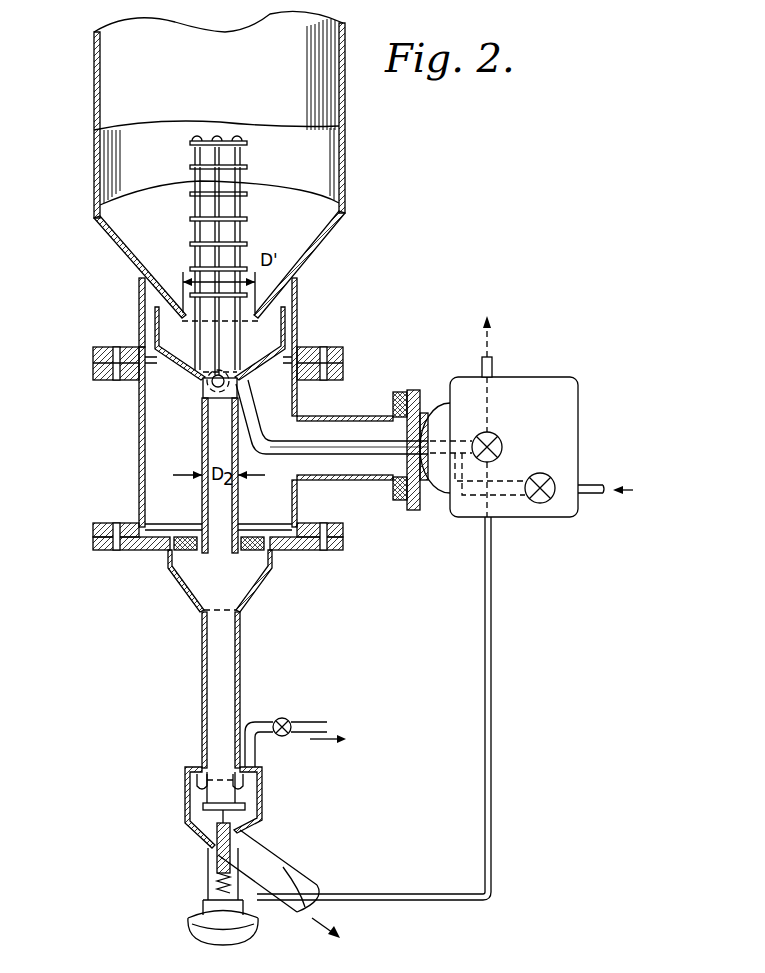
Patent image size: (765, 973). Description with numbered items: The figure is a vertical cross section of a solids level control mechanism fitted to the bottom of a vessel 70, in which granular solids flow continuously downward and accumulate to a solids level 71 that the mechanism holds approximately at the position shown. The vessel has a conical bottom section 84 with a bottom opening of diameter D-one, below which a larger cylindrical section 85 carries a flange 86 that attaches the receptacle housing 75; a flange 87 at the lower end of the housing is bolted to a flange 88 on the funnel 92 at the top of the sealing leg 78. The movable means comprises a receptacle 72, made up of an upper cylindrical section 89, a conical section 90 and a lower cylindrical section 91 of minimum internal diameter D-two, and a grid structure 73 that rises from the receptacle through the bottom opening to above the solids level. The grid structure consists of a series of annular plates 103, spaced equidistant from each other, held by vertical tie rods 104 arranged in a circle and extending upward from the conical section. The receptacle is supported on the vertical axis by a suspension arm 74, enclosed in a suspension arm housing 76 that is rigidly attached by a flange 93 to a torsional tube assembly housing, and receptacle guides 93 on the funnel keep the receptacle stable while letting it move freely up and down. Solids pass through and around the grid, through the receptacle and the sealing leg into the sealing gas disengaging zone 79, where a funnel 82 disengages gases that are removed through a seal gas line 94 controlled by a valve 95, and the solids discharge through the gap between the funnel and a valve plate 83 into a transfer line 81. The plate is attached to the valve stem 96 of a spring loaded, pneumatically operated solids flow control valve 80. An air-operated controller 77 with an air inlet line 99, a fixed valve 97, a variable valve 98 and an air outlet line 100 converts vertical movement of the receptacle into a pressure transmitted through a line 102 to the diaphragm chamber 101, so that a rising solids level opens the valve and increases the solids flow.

The vessel 70 is at (100, 75).
The solids level 71 is at (307, 187).
The receptacle 72 is at (205, 372).
The grid structure 73 is at (227, 240).
The suspension arm 74 is at (250, 423).
The receptacle housing 75 is at (142, 420).
The suspension arm housing 76 is at (323, 417).
The air-operated controller 77 is at (558, 377).
The sealing leg 78 is at (240, 653).
The sealing gas disengaging zone 79 is at (183, 780).
The solids flow control valve 80 is at (248, 802).
The transfer line 81 is at (300, 877).
The funnel 82 is at (253, 778).
The valve plate 83 is at (193, 820).
The conical bottom section 84 is at (122, 255).
The cylindrical section 85 is at (140, 295).
The flange 86 is at (103, 347).
The flange 87 is at (103, 523).
The flange 88 is at (143, 550).
The upper cylindrical section 89 is at (285, 310).
The conical section 90 is at (258, 367).
The lower cylindrical section 91 is at (202, 428).
The funnel 92 is at (262, 577).
The receptacle guides 93 is at (187, 537).
The seal gas line 94 is at (262, 722).
The valve 95 is at (289, 720).
The valve stem 96 is at (207, 842).
The fixed valve 97 is at (545, 473).
The variable valve 98 is at (500, 440).
The air inlet line 99 is at (593, 483).
The air outlet line 100 is at (492, 365).
The diaphragm chamber 101 is at (200, 917).
The line 102 is at (492, 648).
The plates 103 is at (243, 143).
The vertical tie rods 104 is at (193, 157).